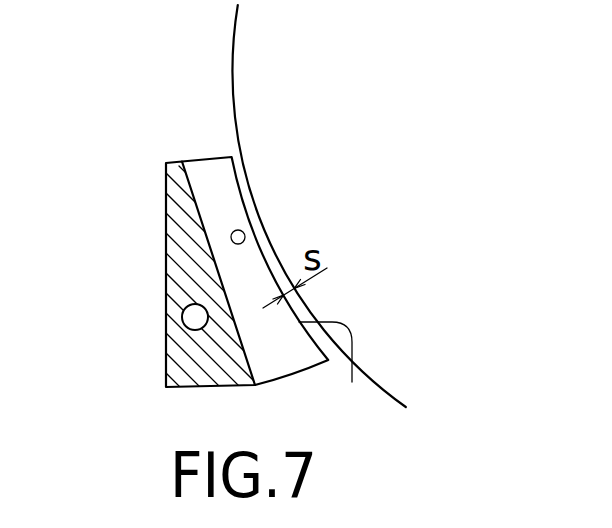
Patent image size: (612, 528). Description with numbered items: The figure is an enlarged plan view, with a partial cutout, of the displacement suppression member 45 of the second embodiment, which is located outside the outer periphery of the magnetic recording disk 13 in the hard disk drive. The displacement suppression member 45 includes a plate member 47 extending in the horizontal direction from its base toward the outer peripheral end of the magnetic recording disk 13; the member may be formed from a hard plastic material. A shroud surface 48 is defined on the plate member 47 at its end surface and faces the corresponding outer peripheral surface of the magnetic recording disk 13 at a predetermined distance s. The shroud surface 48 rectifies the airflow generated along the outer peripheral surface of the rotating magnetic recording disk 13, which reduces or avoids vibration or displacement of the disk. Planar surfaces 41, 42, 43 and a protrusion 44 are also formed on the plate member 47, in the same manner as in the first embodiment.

The magnetic recording disk 13 is at (235, 48).
The planar surface 41 is at (305, 247).
The planar surface 42 is at (305, 248).
The planar surface 43 is at (230, 190).
The protrusion 44 is at (245, 234).
The displacement suppression member 45 is at (214, 319).
The plate member 47 is at (212, 157).
The shroud surface 48 is at (325, 374).